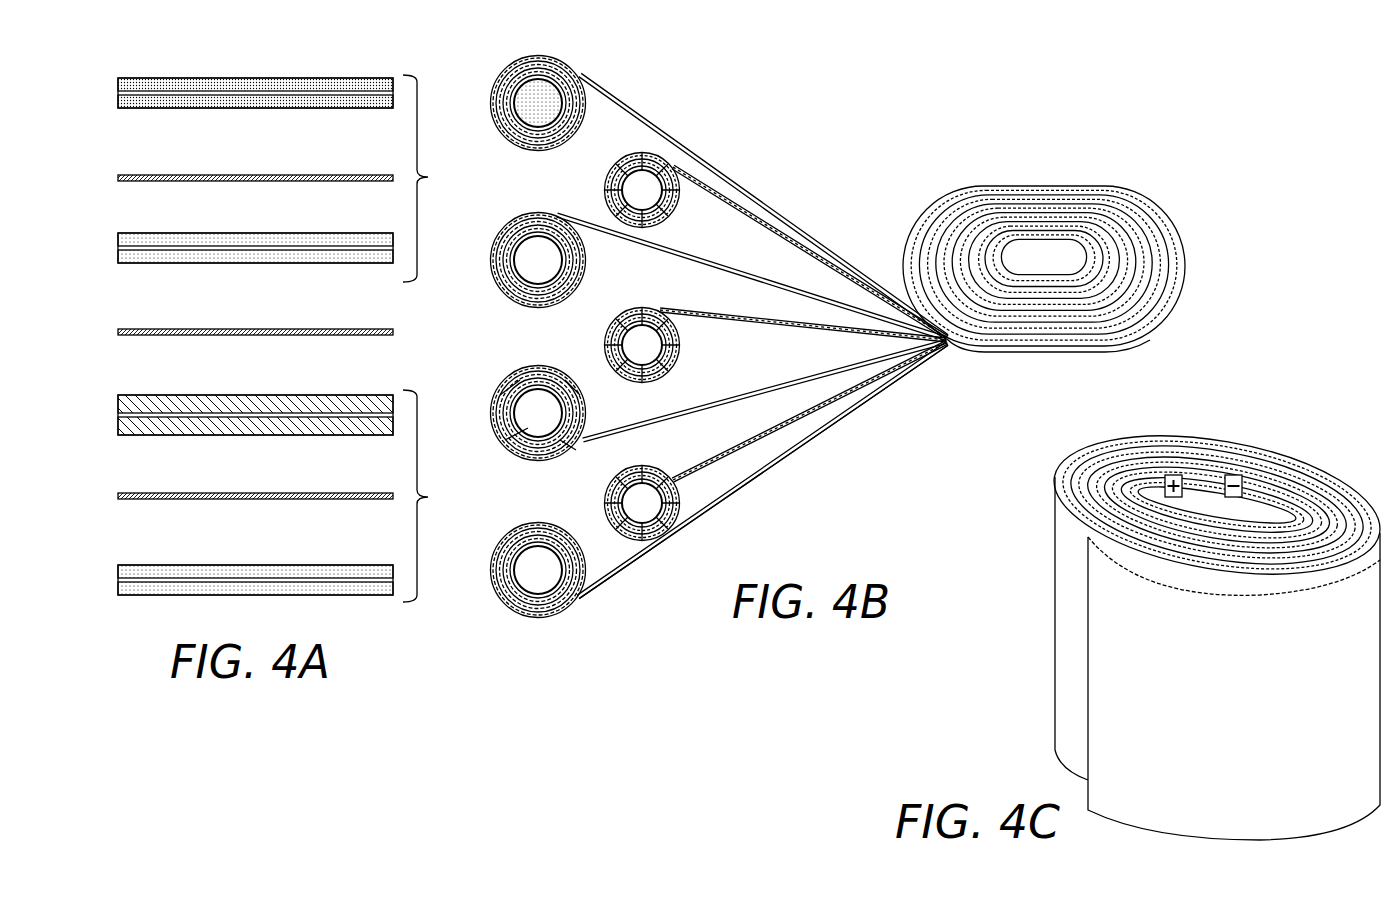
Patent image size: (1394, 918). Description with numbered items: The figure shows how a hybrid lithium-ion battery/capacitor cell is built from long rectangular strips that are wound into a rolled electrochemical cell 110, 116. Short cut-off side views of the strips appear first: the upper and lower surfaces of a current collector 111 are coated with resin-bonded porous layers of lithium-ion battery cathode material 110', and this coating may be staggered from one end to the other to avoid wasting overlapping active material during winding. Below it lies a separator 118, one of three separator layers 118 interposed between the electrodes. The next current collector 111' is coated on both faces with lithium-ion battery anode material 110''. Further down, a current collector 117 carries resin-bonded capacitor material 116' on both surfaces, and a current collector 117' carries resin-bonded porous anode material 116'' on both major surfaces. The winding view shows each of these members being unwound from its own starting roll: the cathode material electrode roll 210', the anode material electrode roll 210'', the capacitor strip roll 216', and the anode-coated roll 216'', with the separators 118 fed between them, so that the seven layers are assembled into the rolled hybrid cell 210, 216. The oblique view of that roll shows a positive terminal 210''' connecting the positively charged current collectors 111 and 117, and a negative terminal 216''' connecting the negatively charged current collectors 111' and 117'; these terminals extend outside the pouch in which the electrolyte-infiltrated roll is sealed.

In FIG. 4A, the rolled electrochemical cell 110 is at (278, 143).
In FIG. 4B, the rolled electrochemical cell 110 is at (720, 198).
In FIG. 4A, the lithium-ion battery cathode material 110' is at (255, 56).
In FIG. 4A, the lithium-ion battery anode material 110'' is at (255, 226).
In FIG. 4A, the current collector 111 is at (214, 78).
In FIG. 4A, the current collector 111' is at (214, 233).
In FIG. 4A, the rolled electrochemical cell 116 is at (278, 480).
In FIG. 4B, the rolled electrochemical cell 116 is at (720, 478).
In FIG. 4A, the capacitor material 116' is at (255, 396).
In FIG. 4A, the anode material 116'' is at (255, 560).
In FIG. 4A, the current collector 117 is at (214, 402).
In FIG. 4B, the current collector 117 is at (763, 471).
In FIG. 4A, the current collector 117' is at (214, 566).
In FIG. 4A, the separator 118 is at (118, 178).
In FIG. 4B, the separator 118 is at (757, 218).
In FIG. 4B, the unwinding roll of cathode material electrode 210' is at (763, 205).
In FIG. 4B, the unwinding roll of anode material electrode 210'' is at (751, 274).
In FIG. 4C, the positive terminal 210''' is at (1164, 452).
In FIG. 4B, the roll material 216' is at (765, 390).
In FIG. 4B, the unwinding roll 216'' is at (762, 470).
In FIG. 4C, the negative terminal 216''' is at (1266, 452).
In FIG. 4B, the rolled hybrid cell 210 is at (1044, 231).
In FIG. 4C, the rolled hybrid cell 210 is at (1217, 624).
In FIG. 4B, the rolled hybrid cell 216 is at (1044, 231).
In FIG. 4C, the rolled hybrid cell 216 is at (1217, 624).